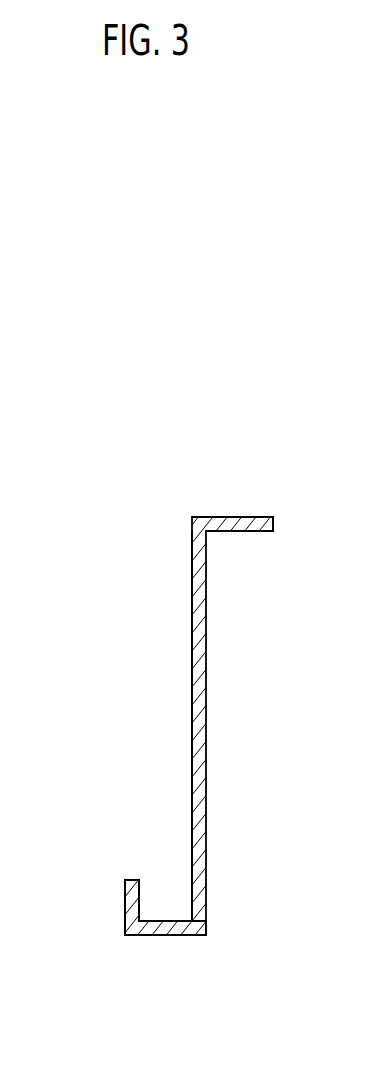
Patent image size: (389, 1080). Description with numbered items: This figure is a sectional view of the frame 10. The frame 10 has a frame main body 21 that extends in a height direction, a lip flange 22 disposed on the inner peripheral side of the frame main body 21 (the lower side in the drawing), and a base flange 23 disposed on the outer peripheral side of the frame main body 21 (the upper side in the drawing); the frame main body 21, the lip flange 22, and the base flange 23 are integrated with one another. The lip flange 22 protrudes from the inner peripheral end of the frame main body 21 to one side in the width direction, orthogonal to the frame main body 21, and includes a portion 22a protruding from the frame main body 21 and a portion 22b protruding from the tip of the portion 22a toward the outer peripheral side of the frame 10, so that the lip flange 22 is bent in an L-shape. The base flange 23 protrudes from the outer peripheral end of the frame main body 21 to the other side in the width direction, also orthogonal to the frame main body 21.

The frame 10 is at (208, 683).
The frame main body 21 is at (199, 783).
The lip flange 22 is at (140, 943).
The portion protruding from the frame main body 22a is at (166, 920).
The portion protruding from the tip portion of portion 22a 22b is at (125, 898).
The base flange 23 is at (242, 517).